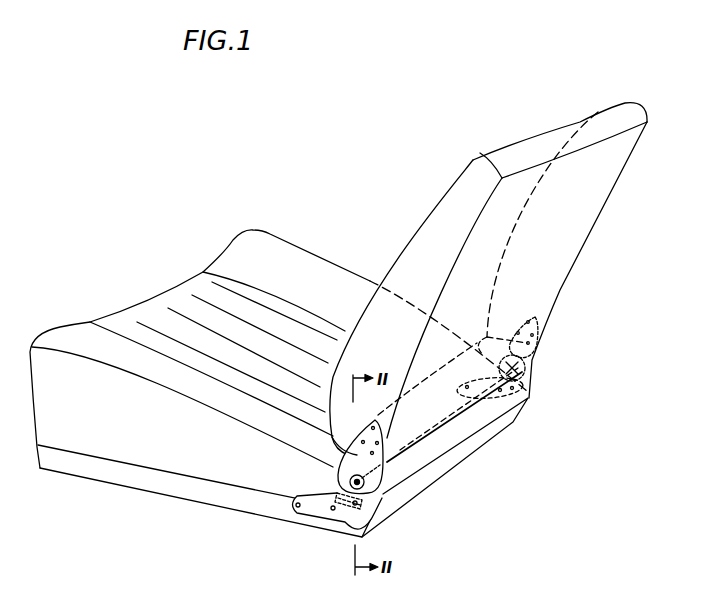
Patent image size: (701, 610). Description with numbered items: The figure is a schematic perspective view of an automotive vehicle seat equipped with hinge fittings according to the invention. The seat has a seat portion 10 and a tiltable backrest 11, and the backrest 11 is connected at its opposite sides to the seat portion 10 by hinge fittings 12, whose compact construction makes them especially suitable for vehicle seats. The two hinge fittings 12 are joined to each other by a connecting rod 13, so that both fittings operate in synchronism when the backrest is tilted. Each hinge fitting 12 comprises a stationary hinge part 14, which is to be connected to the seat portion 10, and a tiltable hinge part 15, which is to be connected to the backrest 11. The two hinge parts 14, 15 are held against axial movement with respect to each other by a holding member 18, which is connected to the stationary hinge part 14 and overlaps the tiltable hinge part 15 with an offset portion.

The seat portion 10 is at (272, 252).
The backrest 11 is at (453, 195).
The hinge fitting 12 is at (392, 490).
The connecting rod 13 is at (440, 435).
The stationary hinge part 14 is at (342, 512).
The tiltable hinge part 15 is at (355, 461).
The holding member 18 is at (340, 500).